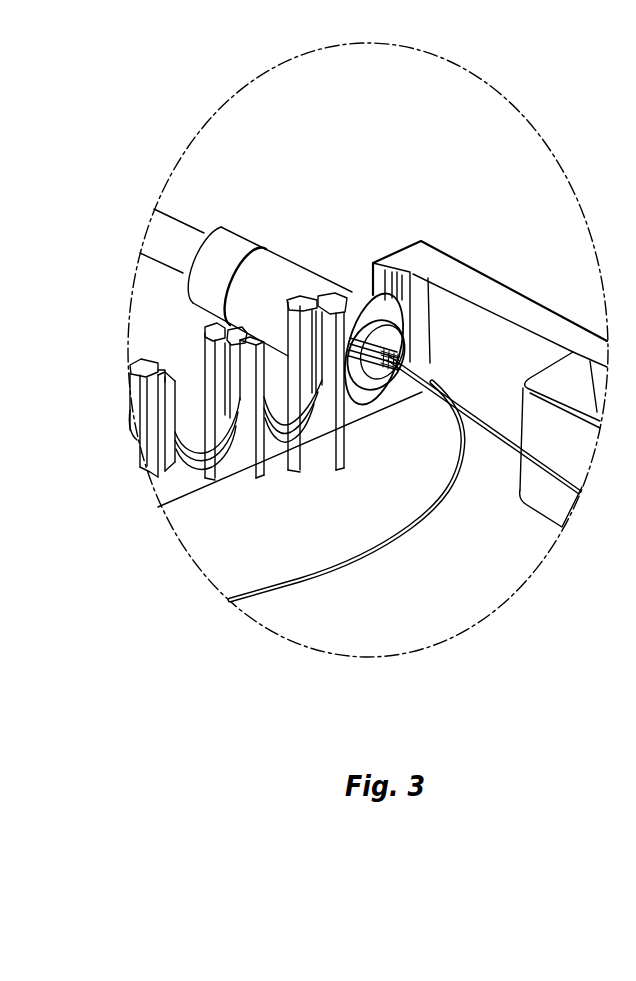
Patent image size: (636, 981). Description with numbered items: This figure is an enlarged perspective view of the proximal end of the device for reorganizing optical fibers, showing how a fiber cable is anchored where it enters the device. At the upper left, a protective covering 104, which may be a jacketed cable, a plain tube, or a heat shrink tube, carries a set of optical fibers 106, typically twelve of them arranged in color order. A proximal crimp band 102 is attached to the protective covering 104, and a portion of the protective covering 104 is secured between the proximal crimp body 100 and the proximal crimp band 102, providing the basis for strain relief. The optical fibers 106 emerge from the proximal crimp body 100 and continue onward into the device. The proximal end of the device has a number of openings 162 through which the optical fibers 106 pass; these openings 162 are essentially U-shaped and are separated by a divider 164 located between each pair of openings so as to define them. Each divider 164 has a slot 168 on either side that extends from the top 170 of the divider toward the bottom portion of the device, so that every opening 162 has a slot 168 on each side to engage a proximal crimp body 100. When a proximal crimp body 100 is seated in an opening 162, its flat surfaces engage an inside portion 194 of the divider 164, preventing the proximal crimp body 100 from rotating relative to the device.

The proximal crimp body 100 is at (347, 287).
The proximal crimp band 102 is at (232, 225).
The protective covering 104 is at (179, 232).
The optical fibers 106 is at (447, 495).
The openings 162 is at (285, 380).
The divider 164 is at (288, 297).
The slot 168 is at (170, 370).
The top 170 is at (220, 328).
The inside portion 194 is at (238, 397).